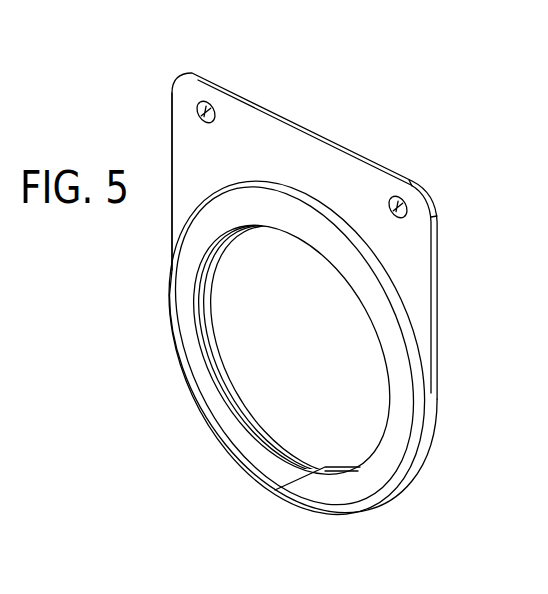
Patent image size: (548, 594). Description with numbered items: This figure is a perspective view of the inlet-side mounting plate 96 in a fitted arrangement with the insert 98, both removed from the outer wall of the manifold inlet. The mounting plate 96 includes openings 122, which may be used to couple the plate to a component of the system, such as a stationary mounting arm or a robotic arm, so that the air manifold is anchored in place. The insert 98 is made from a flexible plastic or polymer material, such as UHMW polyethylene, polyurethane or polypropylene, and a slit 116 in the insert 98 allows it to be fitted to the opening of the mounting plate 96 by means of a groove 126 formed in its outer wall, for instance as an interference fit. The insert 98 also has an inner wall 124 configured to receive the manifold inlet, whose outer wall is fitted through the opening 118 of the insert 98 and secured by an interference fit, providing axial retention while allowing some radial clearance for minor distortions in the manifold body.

The inlet-side mounting plate 96 is at (315, 132).
The insert 98 is at (171, 278).
The slit 116 is at (304, 491).
The opening of the insert 118 is at (262, 228).
The openings 122 is at (204, 102).
The inner wall 124 is at (246, 396).
The groove 126 is at (406, 309).